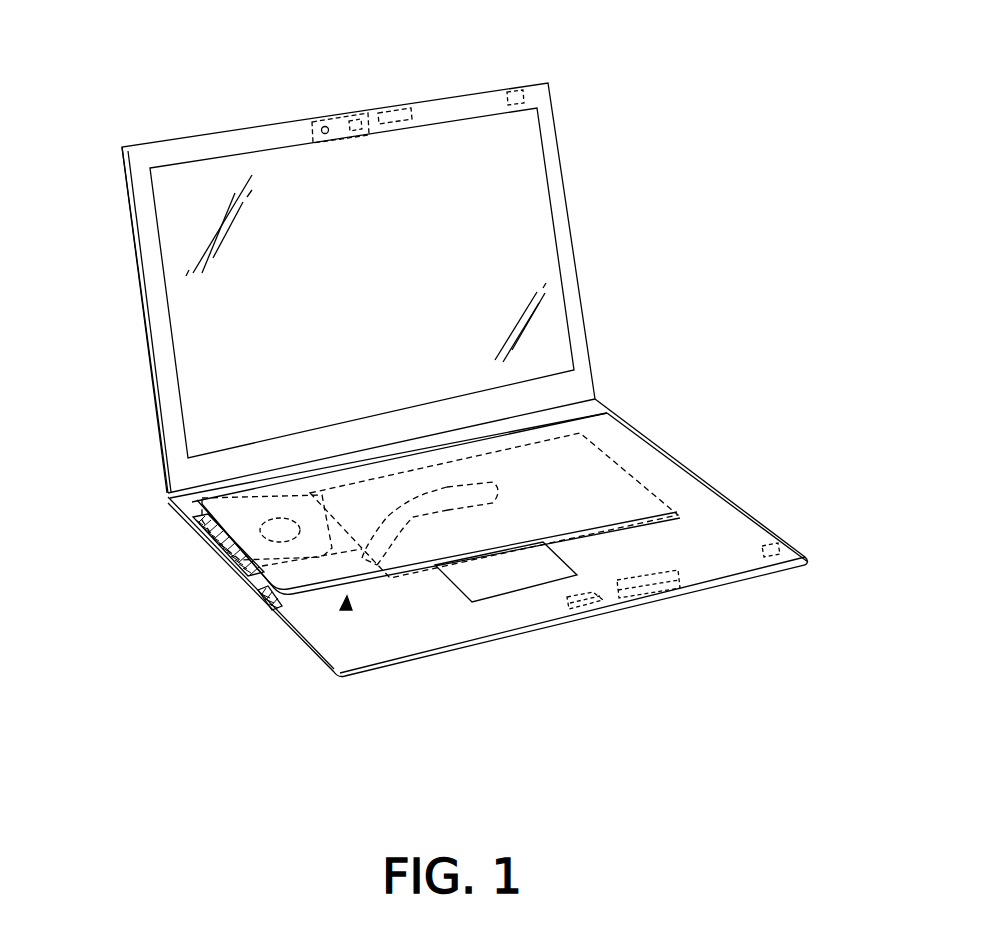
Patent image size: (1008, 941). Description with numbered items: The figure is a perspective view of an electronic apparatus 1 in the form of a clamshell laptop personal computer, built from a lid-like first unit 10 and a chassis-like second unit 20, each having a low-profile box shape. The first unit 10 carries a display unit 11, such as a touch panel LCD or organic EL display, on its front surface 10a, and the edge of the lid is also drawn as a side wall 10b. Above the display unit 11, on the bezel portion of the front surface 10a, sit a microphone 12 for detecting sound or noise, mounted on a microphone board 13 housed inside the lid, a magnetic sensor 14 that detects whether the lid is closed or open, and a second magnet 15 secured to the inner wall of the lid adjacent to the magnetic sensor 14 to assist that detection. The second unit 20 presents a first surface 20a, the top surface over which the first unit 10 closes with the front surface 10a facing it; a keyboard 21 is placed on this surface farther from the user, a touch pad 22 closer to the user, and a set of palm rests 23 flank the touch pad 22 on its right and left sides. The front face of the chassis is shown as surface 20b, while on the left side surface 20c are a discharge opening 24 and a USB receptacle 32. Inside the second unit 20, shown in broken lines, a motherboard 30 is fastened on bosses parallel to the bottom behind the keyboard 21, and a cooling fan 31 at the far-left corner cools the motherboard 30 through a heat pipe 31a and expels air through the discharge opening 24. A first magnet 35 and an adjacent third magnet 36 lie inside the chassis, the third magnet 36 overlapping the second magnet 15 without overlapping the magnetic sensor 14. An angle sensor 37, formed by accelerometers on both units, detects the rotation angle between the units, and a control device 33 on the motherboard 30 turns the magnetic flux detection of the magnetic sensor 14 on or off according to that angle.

The electronic apparatus 1 is at (128, 100).
The first unit 10 is at (322, 265).
The front surface 10a is at (156, 258).
The display housing side wall 10b is at (134, 288).
The display unit 11 is at (574, 237).
The microphone 12 is at (322, 126).
The microphone board 13 is at (333, 117).
The magnetic sensor 14 is at (358, 112).
The second magnet 15 is at (400, 107).
The second unit 20 is at (488, 576).
The first surface 20a is at (533, 592).
The front face of base 20b is at (567, 618).
The left side surface 20c is at (304, 648).
The keyboard 21 is at (568, 423).
The touch pad 22 is at (490, 600).
The palm rests 23 is at (372, 606).
The discharge opening 24 is at (208, 542).
The motherboard 30 is at (346, 603).
The cooling fan 31 is at (424, 499).
The heat pipe 31a is at (448, 485).
The USB receptacle 32 is at (262, 596).
The control device 33 is at (346, 603).
The first magnet 35 is at (614, 600).
The third magnet 36 is at (682, 578).
The angle sensor 37 is at (515, 90).